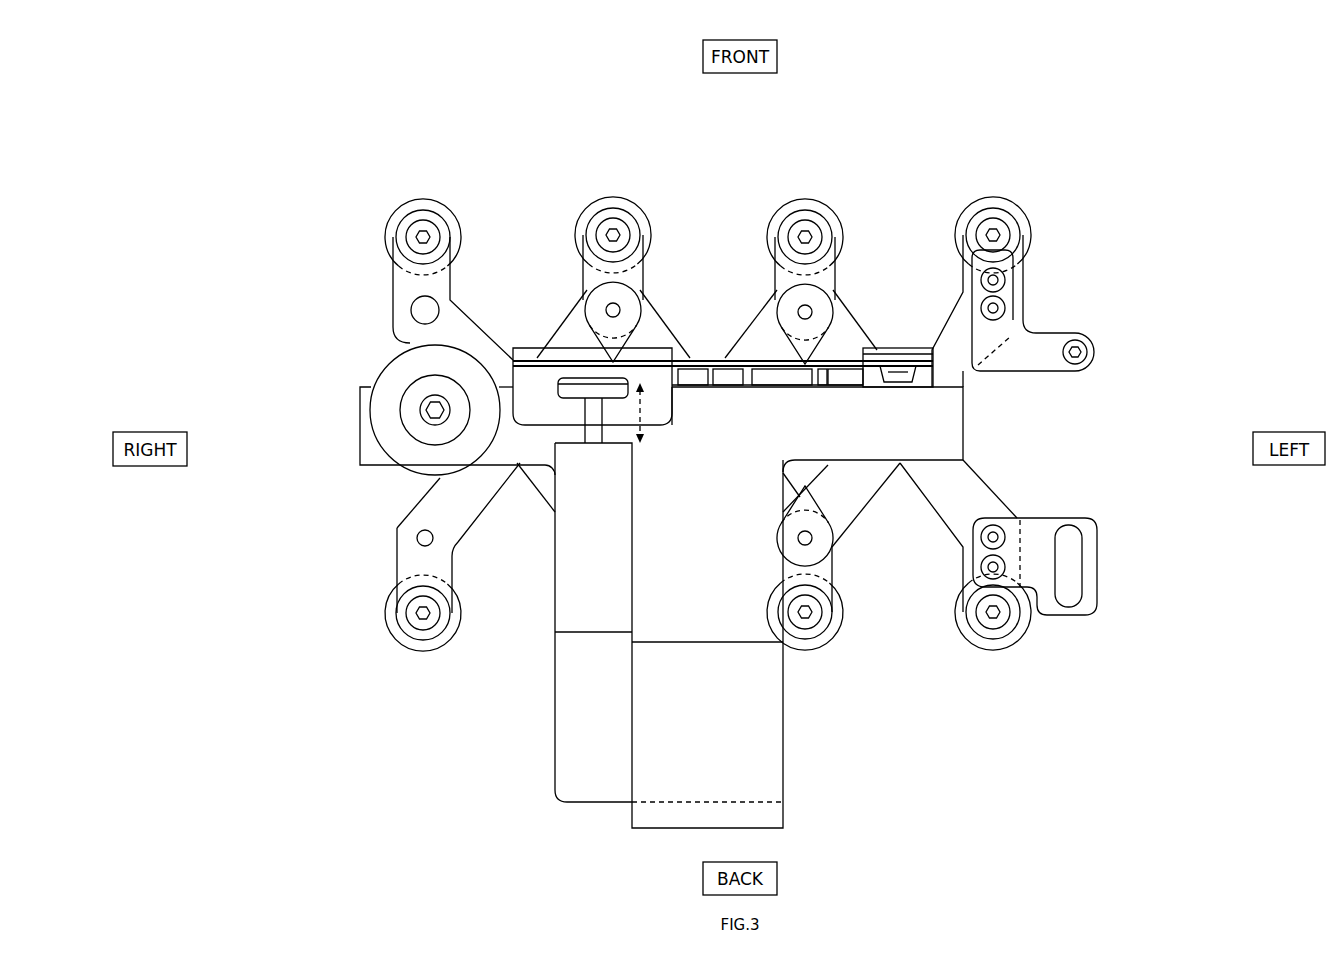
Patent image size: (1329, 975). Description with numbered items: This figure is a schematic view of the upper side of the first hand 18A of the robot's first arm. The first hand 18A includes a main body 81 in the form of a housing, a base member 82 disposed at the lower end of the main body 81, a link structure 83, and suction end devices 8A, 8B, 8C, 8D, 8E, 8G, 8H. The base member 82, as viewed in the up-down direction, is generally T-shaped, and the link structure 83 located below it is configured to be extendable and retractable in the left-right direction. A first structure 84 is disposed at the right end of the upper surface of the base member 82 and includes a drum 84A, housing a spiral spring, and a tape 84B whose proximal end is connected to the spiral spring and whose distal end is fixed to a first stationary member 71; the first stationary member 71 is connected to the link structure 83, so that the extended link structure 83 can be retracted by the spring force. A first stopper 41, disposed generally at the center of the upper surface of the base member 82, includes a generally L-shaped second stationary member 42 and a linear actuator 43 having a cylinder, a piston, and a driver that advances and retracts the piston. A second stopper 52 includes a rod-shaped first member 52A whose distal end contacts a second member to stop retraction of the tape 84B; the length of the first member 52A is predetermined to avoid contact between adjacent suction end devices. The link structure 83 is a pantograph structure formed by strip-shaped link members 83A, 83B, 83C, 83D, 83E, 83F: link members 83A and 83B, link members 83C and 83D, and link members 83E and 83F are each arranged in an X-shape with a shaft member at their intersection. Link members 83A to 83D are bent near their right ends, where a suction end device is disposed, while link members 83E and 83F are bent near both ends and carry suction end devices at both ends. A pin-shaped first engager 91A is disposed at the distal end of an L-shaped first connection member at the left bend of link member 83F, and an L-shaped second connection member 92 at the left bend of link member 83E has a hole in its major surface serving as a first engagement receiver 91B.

The first hand 18A is at (752, 29).
The suction end device 8A is at (423, 198).
The suction end device 8B is at (612, 197).
The suction end device 8C is at (805, 198).
The suction end device 8D is at (994, 197).
The suction end device 8E is at (421, 652).
The suction end device 8G is at (829, 648).
The suction end device 8H is at (1009, 648).
The link structure 83 is at (387, 288).
The link member 83A is at (473, 358).
The link member 83B is at (487, 515).
The link member 83C is at (660, 355).
The link member 83D is at (795, 485).
The link member 83E is at (851, 356).
The link member 83F is at (871, 507).
The first structure 84 is at (378, 367).
The drum 84A is at (360, 423).
The tape 84B is at (528, 346).
The second stationary member 42 is at (551, 376).
The first stopper 41 is at (560, 406).
The linear actuator 43 is at (590, 637).
The second stopper 52 is at (753, 357).
The first member 52A is at (691, 356).
The first stationary member 71 is at (890, 347).
The main body 81 is at (784, 814).
The base member 82 is at (966, 428).
The first engager 91A is at (1097, 352).
The first engagement receiver 91B is at (1063, 617).
The second connection member 92 is at (1100, 580).